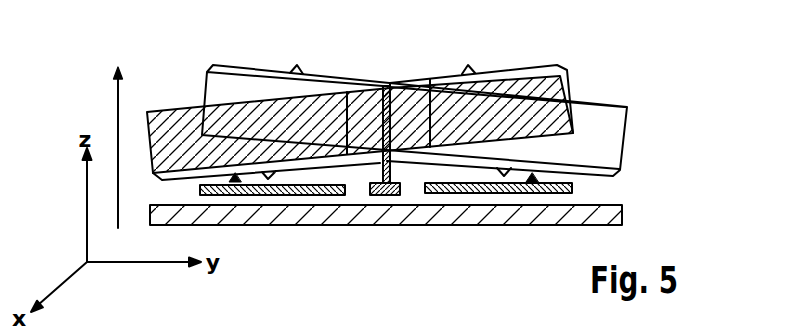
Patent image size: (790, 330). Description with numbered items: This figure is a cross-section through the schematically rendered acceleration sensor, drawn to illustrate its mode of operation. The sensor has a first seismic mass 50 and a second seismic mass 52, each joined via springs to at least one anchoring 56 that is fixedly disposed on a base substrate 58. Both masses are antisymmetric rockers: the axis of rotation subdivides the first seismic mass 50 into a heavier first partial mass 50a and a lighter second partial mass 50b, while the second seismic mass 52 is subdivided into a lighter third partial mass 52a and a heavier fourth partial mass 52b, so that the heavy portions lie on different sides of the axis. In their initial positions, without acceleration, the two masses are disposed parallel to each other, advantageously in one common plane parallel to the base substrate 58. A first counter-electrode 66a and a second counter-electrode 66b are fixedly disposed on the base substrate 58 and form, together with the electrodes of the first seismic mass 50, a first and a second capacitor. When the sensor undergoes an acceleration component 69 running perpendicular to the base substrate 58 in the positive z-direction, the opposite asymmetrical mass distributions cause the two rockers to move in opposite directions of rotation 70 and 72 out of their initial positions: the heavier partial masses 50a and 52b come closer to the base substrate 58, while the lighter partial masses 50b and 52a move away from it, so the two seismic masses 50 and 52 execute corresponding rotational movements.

The first seismic mass 50 is at (173, 110).
The first partial mass 50a is at (270, 181).
The second partial mass 50b is at (481, 84).
The second seismic mass 52 is at (614, 118).
The third partial mass 52a is at (298, 54).
The fourth partial mass 52b is at (504, 177).
The anchoring 56 is at (388, 196).
The base substrate 58 is at (608, 214).
The first counter-electrode 66a is at (337, 190).
The second counter-electrode 66b is at (445, 194).
The acceleration component 69 is at (118, 108).
The direction of rotation 70 is at (235, 182).
The direction of rotation 72 is at (533, 182).